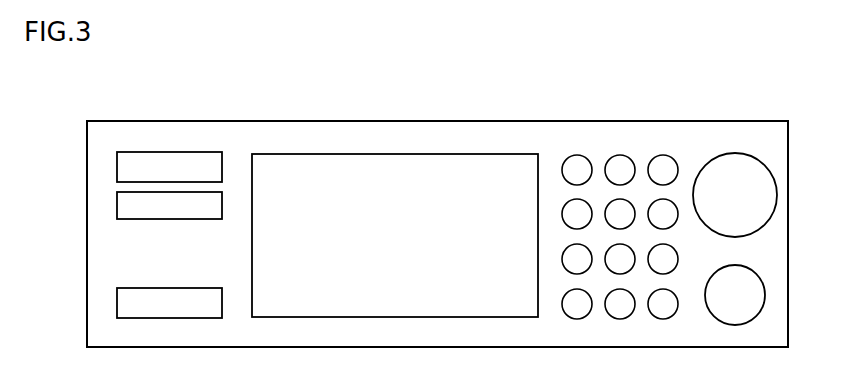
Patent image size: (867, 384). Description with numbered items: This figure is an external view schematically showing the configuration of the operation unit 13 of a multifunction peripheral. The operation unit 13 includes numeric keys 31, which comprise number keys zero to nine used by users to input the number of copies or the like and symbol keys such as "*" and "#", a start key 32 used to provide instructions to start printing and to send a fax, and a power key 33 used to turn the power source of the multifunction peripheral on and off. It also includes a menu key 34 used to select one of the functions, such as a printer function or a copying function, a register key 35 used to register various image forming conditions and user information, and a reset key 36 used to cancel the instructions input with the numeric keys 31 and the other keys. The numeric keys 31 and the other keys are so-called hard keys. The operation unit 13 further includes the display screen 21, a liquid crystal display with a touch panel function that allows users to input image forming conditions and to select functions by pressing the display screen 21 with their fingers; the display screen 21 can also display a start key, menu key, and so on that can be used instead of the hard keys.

The operation unit 13 is at (741, 121).
The display screen 21 is at (497, 154).
The numeric keys 31 is at (663, 145).
The start key 32 is at (766, 295).
The power key 33 is at (774, 177).
The menu key 34 is at (117, 167).
The register key 35 is at (117, 208).
The reset key 36 is at (117, 304).